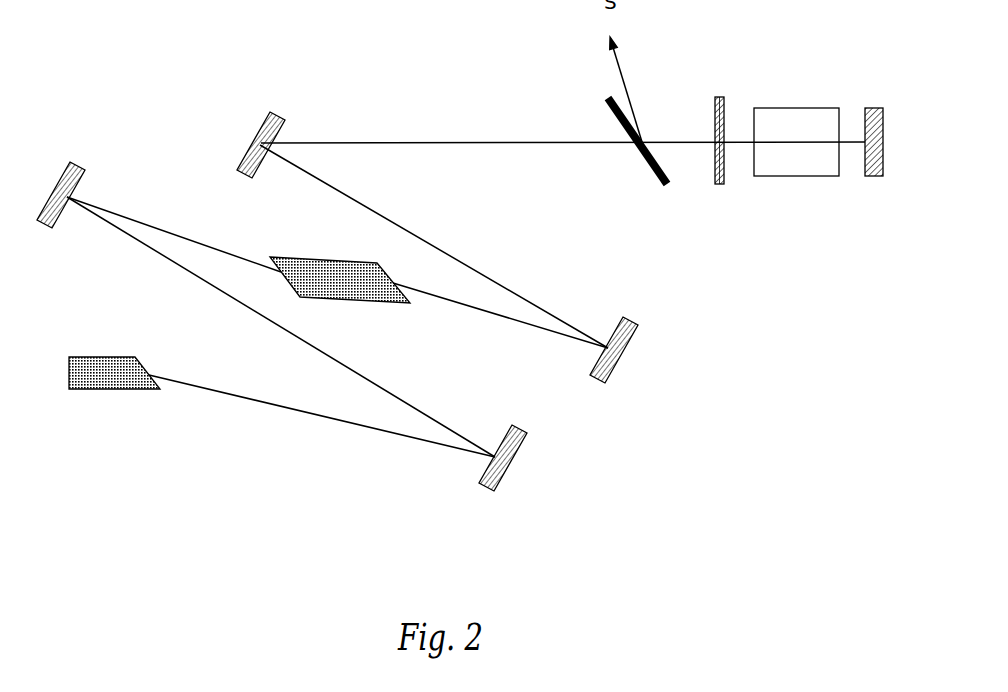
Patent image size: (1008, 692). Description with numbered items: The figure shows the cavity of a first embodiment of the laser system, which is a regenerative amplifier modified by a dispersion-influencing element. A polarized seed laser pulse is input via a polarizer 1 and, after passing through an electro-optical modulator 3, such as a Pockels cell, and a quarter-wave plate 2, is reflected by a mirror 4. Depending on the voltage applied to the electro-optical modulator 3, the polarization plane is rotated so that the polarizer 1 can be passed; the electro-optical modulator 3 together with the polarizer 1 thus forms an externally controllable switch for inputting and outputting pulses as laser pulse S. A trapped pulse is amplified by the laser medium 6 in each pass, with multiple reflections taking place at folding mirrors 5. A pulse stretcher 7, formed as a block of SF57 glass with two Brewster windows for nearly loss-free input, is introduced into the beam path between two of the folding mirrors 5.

The polarizer 1 is at (618, 160).
The quarter-wave plate 2 is at (761, 105).
The electro-optical modulator 3 is at (816, 123).
The mirror 4 is at (827, 181).
The folding mirrors 5 is at (379, 291).
The laser medium 6 is at (126, 391).
The pulse stretcher 7 is at (348, 305).